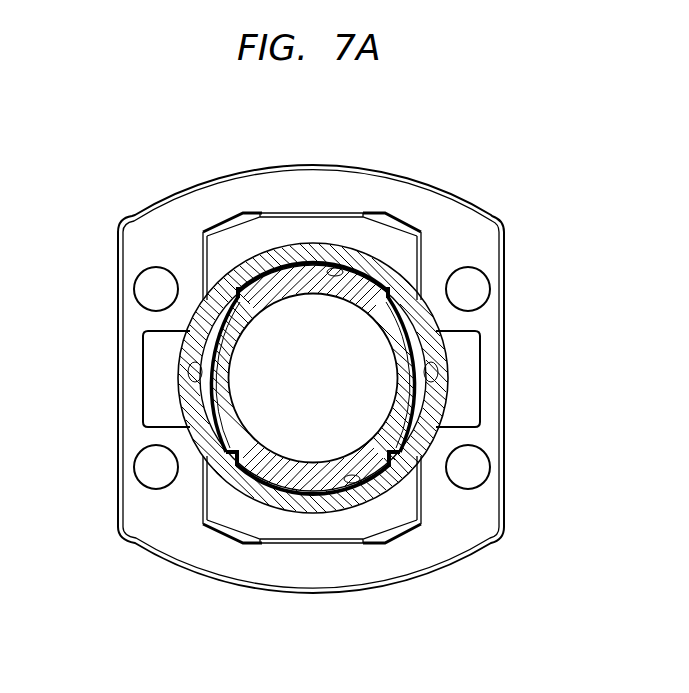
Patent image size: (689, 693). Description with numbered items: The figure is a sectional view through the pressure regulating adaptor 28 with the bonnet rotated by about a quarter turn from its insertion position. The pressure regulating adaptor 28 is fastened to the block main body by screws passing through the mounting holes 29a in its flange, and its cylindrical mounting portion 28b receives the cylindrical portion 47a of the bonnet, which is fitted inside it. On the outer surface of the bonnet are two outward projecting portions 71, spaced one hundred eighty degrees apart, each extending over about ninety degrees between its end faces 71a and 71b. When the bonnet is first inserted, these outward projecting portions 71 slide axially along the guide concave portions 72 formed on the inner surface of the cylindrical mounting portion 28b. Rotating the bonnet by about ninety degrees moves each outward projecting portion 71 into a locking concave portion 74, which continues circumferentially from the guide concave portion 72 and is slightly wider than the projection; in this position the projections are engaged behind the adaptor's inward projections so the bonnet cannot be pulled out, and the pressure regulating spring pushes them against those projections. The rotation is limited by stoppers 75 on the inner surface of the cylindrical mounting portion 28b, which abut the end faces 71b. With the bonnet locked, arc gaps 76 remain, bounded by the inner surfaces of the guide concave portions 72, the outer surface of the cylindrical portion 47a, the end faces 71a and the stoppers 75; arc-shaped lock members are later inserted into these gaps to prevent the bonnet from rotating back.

The pressure regulating adaptor 28 is at (452, 532).
The cylindrical mounting portion 28b is at (192, 432).
The mounting holes 29a is at (468, 288).
The cylindrical portion 47a is at (293, 468).
The outward projecting portions 71 is at (266, 278).
The end face 71a is at (224, 287).
The end face 71b is at (400, 288).
The guide concave portions 72 is at (178, 390).
The locking concave portion 74 is at (322, 258).
The stoppers 75 is at (233, 460).
The arc gaps 76 is at (173, 342).